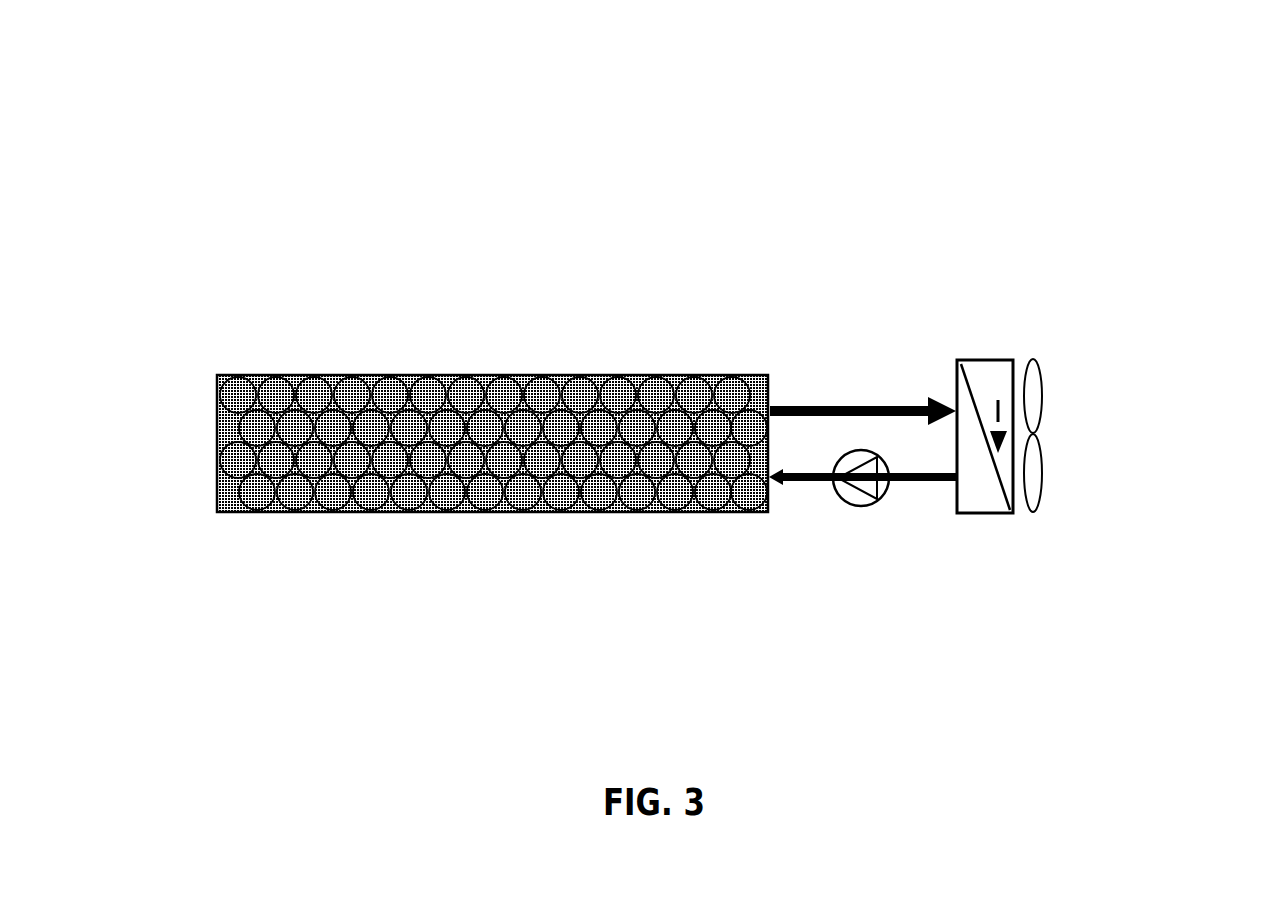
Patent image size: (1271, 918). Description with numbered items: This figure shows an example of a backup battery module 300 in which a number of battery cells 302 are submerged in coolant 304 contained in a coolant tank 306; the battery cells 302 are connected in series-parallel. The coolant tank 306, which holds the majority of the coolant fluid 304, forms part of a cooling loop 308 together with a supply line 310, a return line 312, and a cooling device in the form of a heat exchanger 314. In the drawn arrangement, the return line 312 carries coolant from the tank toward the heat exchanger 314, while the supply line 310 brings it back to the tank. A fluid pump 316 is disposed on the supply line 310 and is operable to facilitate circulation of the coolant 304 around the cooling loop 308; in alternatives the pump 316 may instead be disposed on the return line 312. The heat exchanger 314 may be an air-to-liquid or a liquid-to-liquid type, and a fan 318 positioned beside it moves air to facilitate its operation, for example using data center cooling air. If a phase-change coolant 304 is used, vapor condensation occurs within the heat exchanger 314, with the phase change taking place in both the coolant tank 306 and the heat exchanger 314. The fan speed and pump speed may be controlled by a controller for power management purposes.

The battery module 300 is at (358, 62).
The battery cells 302 is at (488, 425).
The coolant 304 is at (238, 483).
The coolant tank 306 is at (248, 366).
The cooling loop 308 is at (776, 449).
The supply line 310 is at (910, 482).
The return line 312 is at (792, 405).
The heat exchanger 314 is at (977, 505).
The fluid pump 316 is at (830, 508).
The fan 318 is at (1055, 398).